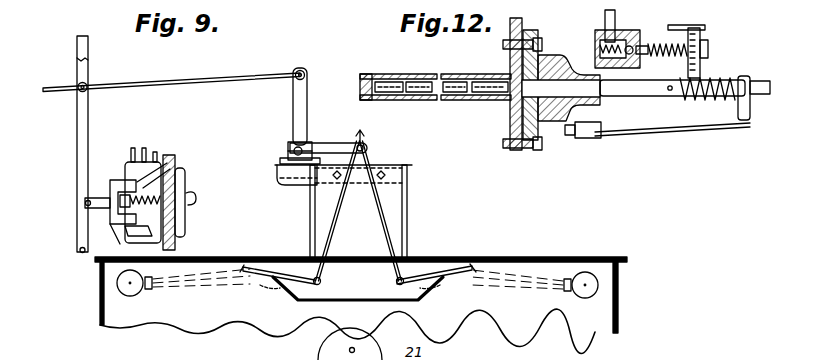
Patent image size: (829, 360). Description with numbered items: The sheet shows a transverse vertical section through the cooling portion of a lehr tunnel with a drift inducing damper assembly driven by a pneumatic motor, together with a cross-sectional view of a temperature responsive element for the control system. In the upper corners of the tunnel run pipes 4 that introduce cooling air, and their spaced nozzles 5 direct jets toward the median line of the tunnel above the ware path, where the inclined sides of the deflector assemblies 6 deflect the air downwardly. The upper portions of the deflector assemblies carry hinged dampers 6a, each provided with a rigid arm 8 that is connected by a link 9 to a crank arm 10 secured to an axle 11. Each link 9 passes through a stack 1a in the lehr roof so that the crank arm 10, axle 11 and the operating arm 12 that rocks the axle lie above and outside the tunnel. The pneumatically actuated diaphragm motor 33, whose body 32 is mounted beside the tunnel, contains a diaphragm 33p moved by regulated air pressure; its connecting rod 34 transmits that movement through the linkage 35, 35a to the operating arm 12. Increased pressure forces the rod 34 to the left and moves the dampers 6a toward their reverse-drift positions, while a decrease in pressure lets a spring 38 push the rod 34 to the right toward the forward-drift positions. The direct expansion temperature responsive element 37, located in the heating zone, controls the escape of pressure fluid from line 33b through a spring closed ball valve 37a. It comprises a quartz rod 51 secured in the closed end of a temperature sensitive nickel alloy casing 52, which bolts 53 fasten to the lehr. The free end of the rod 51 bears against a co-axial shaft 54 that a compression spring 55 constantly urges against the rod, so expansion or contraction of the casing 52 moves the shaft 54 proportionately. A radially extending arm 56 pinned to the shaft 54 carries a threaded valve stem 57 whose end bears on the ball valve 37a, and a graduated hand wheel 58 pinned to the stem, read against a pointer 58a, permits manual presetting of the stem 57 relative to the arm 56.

In FIG. 9, the stack 1a is at (408, 181).
In FIG. 9, the pipes 4 is at (130, 296).
In FIG. 9, the nozzles 5 is at (152, 290).
In FIG. 9, the deflector assemblies 6 is at (326, 309).
In FIG. 9, the dampers 6a is at (255, 280).
In FIG. 9, the rigid arm 8 is at (320, 285).
In FIG. 9, the link 9 is at (330, 222).
In FIG. 9, the crank arm 10 is at (340, 144).
In FIG. 9, the axle 11 is at (289, 148).
In FIG. 9, the operating arm 12 is at (294, 110).
In FIG. 9, the solenoid 32 is at (126, 165).
In FIG. 9, the diaphragm motor 33 is at (185, 165).
In FIG. 9, the diaphragm 33p is at (170, 155).
In FIG. 12, the line 33b is at (605, 22).
In FIG. 9, the connecting rod 34 is at (105, 195).
In FIG. 9, the linkage 35 is at (77, 140).
In FIG. 9, the linkage 35a is at (140, 84).
In FIG. 12, the temperature responsive element 37 is at (503, 114).
In FIG. 12, the spring closed ball valve 37a is at (595, 45).
In FIG. 9, the spring 38 is at (160, 200).
In FIG. 12, the quartz rod 51 is at (490, 82).
In FIG. 12, the nickel alloy casing 52 is at (412, 76).
In FIG. 12, the bolts 53 is at (540, 40).
In FIG. 12, the shaft 54 is at (650, 96).
In FIG. 12, the compression spring 55 is at (728, 100).
In FIG. 12, the arm 56 is at (672, 42).
In FIG. 12, the valve stem 57 is at (650, 44).
In FIG. 12, the hand wheel 58 is at (704, 58).
In FIG. 12, the pointer 58a is at (706, 27).